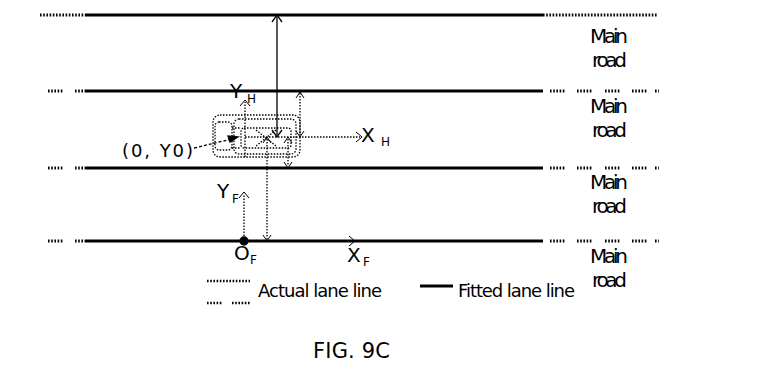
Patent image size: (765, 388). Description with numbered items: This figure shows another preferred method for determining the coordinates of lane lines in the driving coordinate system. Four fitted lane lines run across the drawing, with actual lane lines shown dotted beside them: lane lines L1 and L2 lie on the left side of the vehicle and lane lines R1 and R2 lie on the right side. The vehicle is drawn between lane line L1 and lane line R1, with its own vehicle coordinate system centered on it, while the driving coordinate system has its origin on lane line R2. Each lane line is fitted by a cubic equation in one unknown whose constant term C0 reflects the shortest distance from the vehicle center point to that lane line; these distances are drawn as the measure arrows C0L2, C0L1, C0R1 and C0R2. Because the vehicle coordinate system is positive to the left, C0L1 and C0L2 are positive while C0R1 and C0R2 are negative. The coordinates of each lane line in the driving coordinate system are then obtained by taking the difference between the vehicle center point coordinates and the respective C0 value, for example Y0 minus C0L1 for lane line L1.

The lane line L2 is at (349, 32).
The lane line L1 is at (353, 106).
The lane line R1 is at (353, 182).
The lane line R2 is at (353, 256).
The C0 value of lane line L2 C0L2 is at (302, 76).
The C0 value of lane line L1 C0L1 is at (324, 114).
The C0 value of lane line R1 C0R1 is at (315, 152).
The C0 value of lane line R2 C0R2 is at (295, 189).